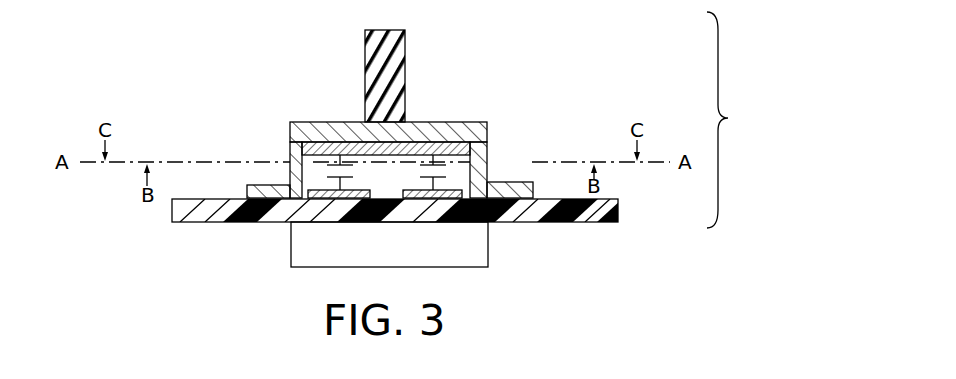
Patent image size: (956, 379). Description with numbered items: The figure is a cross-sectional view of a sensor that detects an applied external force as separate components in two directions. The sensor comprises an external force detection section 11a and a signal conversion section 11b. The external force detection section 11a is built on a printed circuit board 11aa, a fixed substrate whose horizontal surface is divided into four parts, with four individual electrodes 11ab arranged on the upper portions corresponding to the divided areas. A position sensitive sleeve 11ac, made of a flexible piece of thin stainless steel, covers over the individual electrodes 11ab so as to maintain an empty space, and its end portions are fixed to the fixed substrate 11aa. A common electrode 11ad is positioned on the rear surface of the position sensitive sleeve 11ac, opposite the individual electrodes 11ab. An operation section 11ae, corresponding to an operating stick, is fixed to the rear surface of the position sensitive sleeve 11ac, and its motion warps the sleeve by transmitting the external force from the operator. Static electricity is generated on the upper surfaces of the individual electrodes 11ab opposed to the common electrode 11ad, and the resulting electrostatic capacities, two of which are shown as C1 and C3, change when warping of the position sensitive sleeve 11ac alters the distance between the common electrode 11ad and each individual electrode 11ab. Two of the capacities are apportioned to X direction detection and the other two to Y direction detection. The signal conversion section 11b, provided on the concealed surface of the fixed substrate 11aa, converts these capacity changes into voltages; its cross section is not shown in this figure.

The external force detection section 11a is at (739, 120).
The printed circuit board 11aa is at (602, 207).
The individual electrodes 11ab is at (533, 193).
The position sensitive sleeve 11ac is at (473, 122).
The common electrode 11ad is at (488, 140).
The operation section 11ae is at (405, 63).
The signal conversion section 11b is at (475, 246).
The electrostatic capacity C1 is at (488, 171).
The electrostatic capacity C3 is at (290, 172).